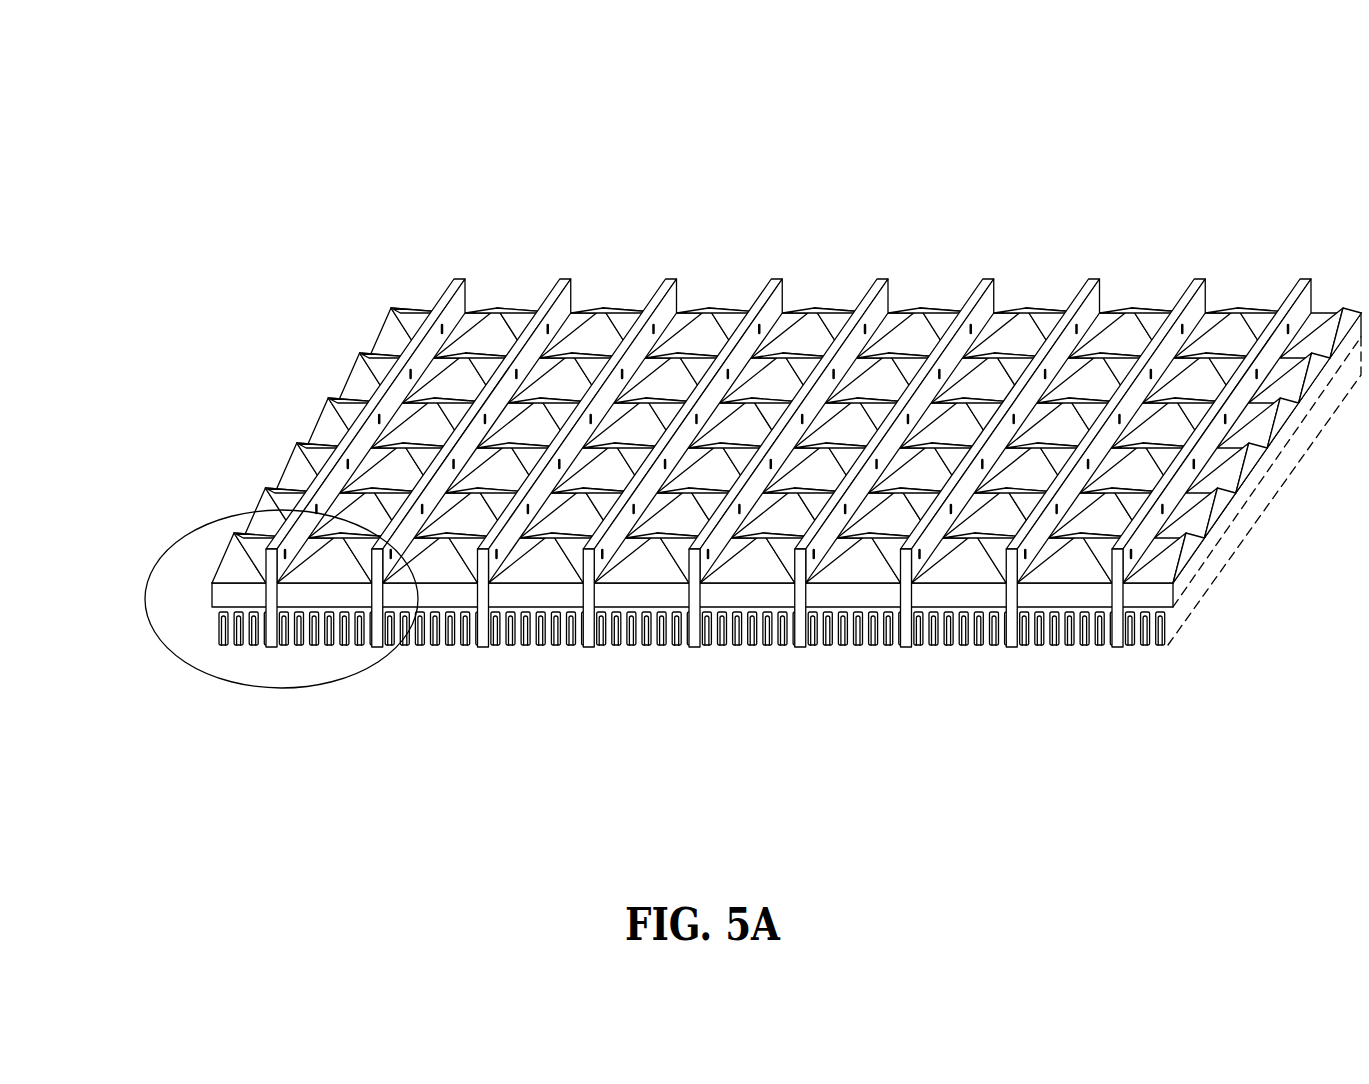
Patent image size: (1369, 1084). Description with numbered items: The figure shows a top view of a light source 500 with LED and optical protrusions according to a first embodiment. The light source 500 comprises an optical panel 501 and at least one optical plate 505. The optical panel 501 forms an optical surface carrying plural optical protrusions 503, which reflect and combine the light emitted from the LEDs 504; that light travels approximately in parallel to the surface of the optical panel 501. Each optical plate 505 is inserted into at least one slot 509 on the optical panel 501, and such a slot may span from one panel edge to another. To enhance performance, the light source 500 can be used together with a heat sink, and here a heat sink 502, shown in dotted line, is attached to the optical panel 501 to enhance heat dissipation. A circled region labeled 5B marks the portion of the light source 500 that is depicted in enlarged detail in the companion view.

The light source 500 is at (786, 419).
The optical panel 501 is at (1148, 312).
The heat sink 502 is at (935, 648).
The optical protrusions 503 is at (486, 326).
The LEDs 504 is at (660, 325).
The optical plate 505 is at (996, 300).
The slot 509 is at (1007, 647).
The detail region of FIG. 5B is at (195, 581).